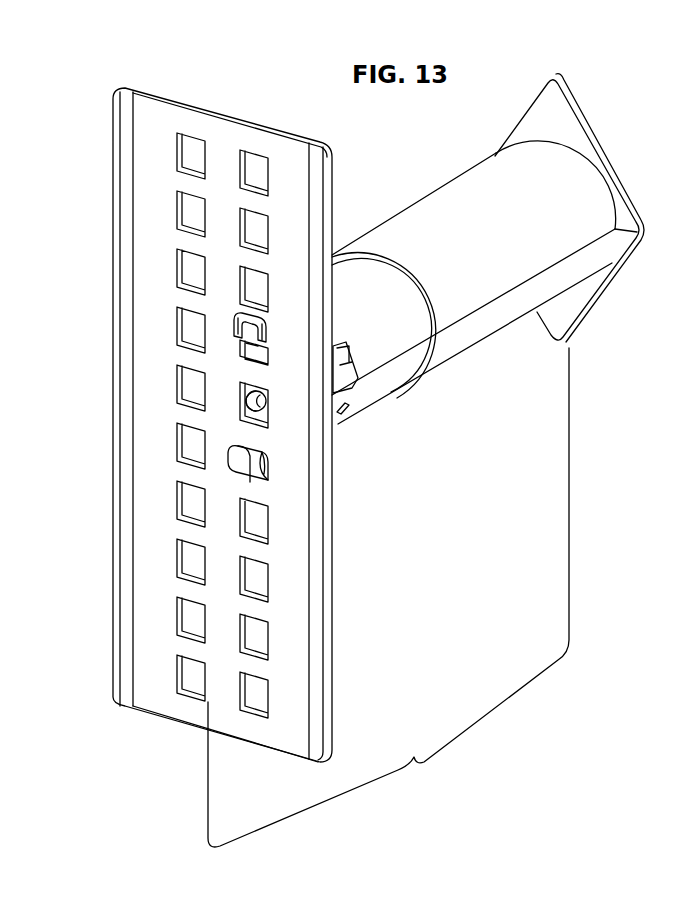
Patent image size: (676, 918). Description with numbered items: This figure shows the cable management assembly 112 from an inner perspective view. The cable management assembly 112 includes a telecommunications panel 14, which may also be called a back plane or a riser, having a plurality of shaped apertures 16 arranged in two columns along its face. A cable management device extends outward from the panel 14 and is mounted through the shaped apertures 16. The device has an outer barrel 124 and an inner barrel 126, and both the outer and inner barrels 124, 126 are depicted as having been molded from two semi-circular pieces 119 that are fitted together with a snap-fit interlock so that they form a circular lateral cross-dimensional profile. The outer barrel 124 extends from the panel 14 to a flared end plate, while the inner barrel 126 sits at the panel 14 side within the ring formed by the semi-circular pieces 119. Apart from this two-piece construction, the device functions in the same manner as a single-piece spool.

The telecommunications panel 14 is at (298, 600).
The shaped apertures 16 is at (258, 693).
The cable management assembly 112 is at (388, 597).
The semi-circular pieces 119 is at (353, 278).
The outer barrel 124 is at (467, 343).
The inner barrel 126 is at (383, 387).